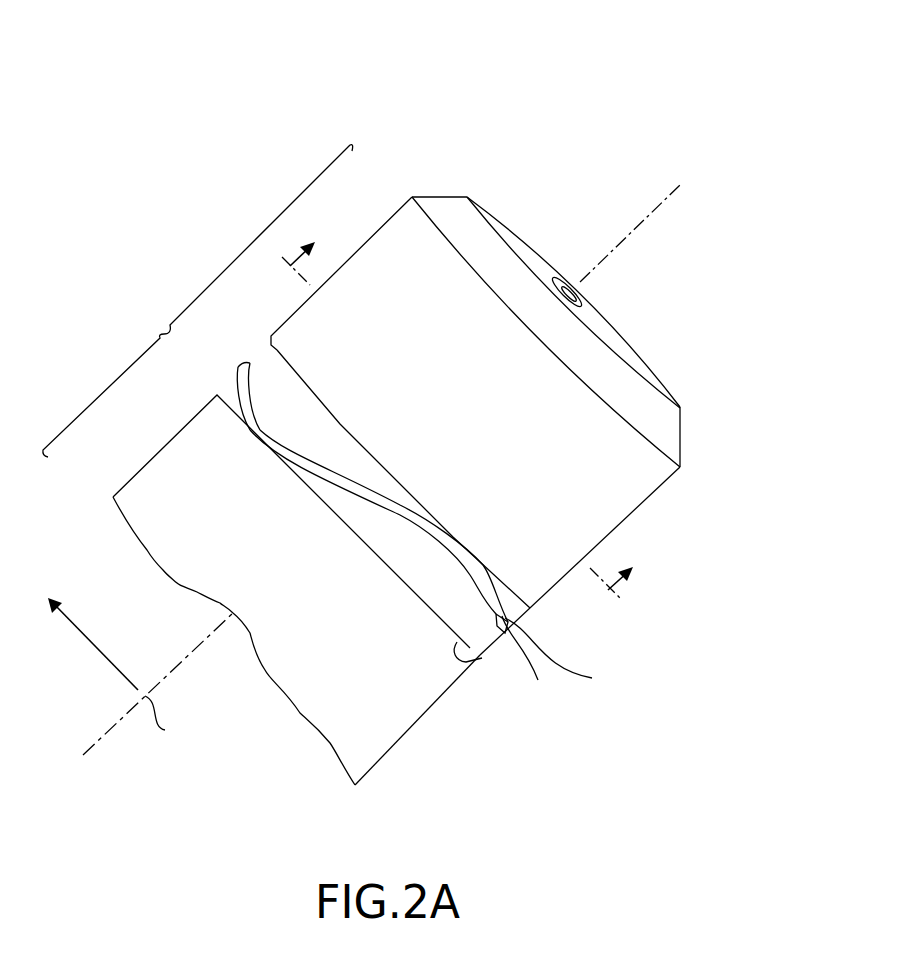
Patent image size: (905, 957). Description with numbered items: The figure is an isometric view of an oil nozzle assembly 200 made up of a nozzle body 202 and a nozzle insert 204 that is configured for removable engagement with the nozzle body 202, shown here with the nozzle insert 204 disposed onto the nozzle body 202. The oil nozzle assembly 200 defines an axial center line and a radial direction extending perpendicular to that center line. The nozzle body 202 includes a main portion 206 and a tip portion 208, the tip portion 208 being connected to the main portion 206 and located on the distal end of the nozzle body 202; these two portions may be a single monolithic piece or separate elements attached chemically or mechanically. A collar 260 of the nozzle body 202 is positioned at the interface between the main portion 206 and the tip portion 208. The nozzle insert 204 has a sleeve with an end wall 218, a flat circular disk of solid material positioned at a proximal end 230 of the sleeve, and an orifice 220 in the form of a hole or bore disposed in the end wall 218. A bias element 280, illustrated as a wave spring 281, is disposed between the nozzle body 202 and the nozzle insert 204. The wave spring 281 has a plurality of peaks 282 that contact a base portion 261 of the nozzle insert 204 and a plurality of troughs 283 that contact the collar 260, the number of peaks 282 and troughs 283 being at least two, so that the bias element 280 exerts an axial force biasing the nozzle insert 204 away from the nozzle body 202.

The oil nozzle assembly 200 is at (146, 106).
The nozzle body 202 is at (402, 713).
The nozzle insert 204 is at (650, 478).
The main portion 206 is at (106, 385).
The tip portion 208 is at (252, 237).
The end wall 218 is at (612, 330).
The orifice 220 is at (577, 297).
The proximal end 230 is at (645, 365).
The collar 260 is at (473, 666).
The base portion 261 is at (530, 606).
The bias element 280 is at (540, 664).
The wave spring 281 is at (570, 658).
The peaks 282 is at (453, 540).
The troughs 283 is at (261, 441).